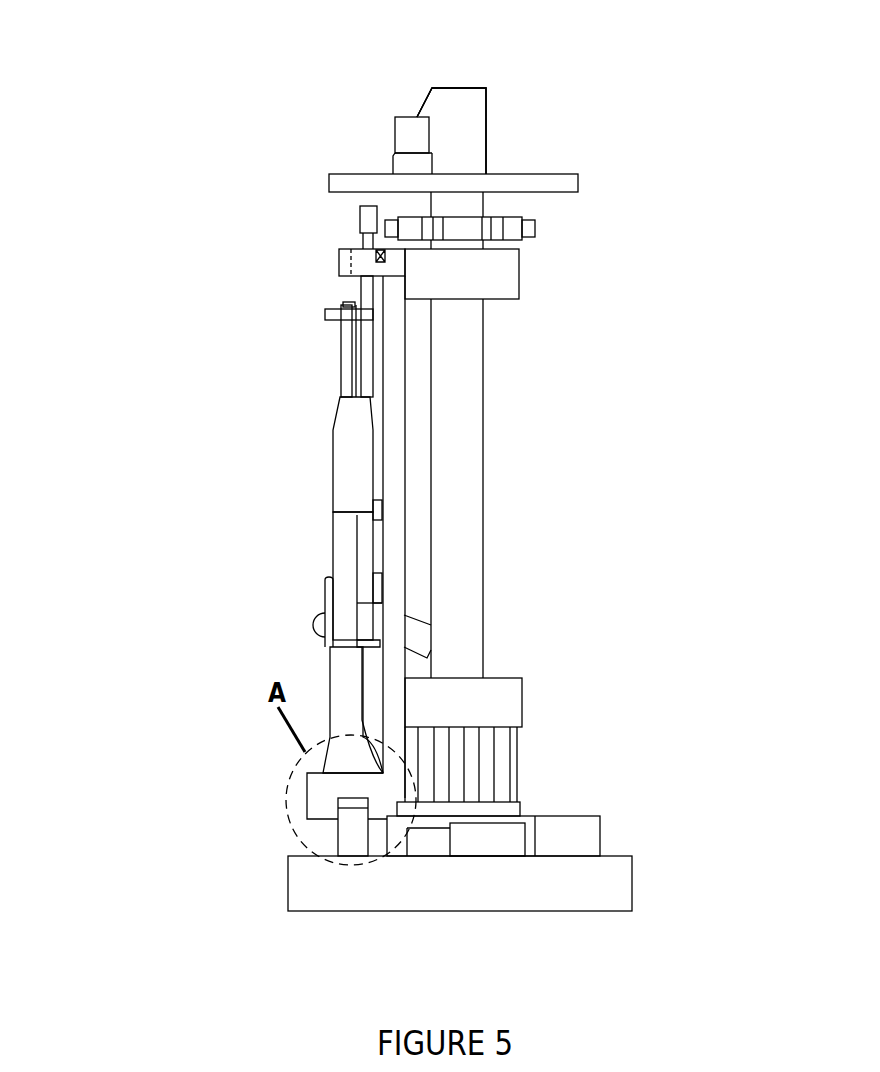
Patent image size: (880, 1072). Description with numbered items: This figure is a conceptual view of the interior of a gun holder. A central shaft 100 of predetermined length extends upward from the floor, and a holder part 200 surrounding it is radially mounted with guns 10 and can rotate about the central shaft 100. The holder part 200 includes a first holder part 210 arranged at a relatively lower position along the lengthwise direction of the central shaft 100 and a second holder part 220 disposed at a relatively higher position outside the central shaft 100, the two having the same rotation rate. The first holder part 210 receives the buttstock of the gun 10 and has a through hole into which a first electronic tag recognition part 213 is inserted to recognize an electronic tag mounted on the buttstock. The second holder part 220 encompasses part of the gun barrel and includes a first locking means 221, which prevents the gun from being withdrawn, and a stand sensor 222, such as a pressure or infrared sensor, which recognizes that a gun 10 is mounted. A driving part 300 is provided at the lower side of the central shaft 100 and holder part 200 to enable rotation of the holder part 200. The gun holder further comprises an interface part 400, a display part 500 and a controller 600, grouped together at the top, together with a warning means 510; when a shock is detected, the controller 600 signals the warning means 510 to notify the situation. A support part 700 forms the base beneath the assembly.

The gun 10 is at (348, 470).
The central shaft 100 is at (473, 495).
The holder part 200 is at (152, 219).
The first holder part 210 is at (283, 585).
The first electronic tag recognition part 213 is at (350, 838).
The second holder part 220 is at (235, 192).
The first locking means 221 is at (352, 266).
The stand sensor 222 is at (379, 254).
The driving part 300 is at (590, 825).
The interface part 400 is at (468, 88).
The display part 500 is at (451, 131).
The warning means 510 is at (413, 132).
The controller 600 is at (451, 131).
The support part 700 is at (627, 893).